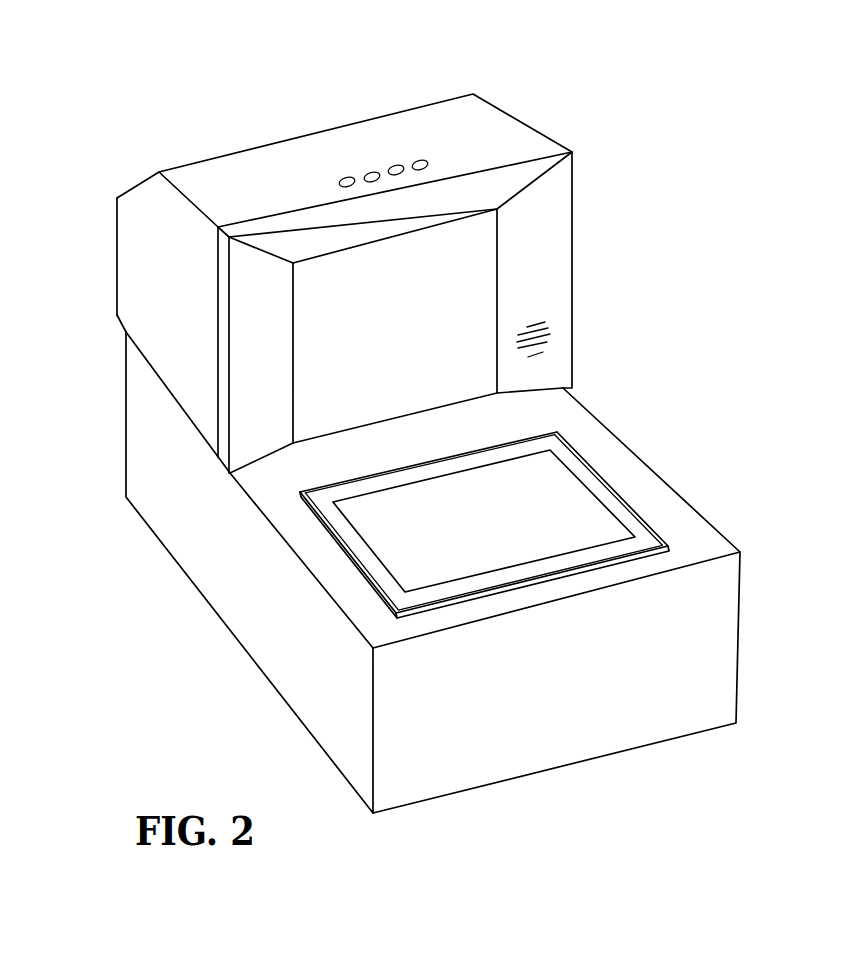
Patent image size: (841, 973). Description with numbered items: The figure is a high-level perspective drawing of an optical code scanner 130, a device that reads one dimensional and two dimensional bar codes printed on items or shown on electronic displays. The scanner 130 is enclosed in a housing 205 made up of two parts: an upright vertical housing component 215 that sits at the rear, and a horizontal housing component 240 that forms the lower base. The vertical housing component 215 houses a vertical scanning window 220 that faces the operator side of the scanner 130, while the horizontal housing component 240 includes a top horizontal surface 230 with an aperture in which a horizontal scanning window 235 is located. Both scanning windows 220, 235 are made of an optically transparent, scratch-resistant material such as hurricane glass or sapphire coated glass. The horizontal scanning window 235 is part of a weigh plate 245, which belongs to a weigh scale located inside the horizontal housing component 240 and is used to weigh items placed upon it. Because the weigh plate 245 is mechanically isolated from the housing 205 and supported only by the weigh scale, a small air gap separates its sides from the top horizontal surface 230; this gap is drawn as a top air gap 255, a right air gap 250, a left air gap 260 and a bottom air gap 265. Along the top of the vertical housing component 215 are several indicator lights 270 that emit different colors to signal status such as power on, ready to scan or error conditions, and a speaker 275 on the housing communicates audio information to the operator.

The optical code scanner 130 is at (138, 53).
The housing 205 is at (143, 447).
The vertical housing component 215 is at (490, 123).
The vertical scanning window 220 is at (450, 282).
The top horizontal surface 230 is at (593, 432).
The horizontal scanning window 235 is at (413, 557).
The horizontal housing component 240 is at (612, 628).
The weigh plate 245 is at (628, 520).
The right air gap 250 is at (608, 480).
The top air gap 255 is at (420, 465).
The left air gap 260 is at (343, 550).
The bottom air gap 265 is at (497, 588).
The indicator lights 270 is at (413, 161).
The speaker 275 is at (550, 342).